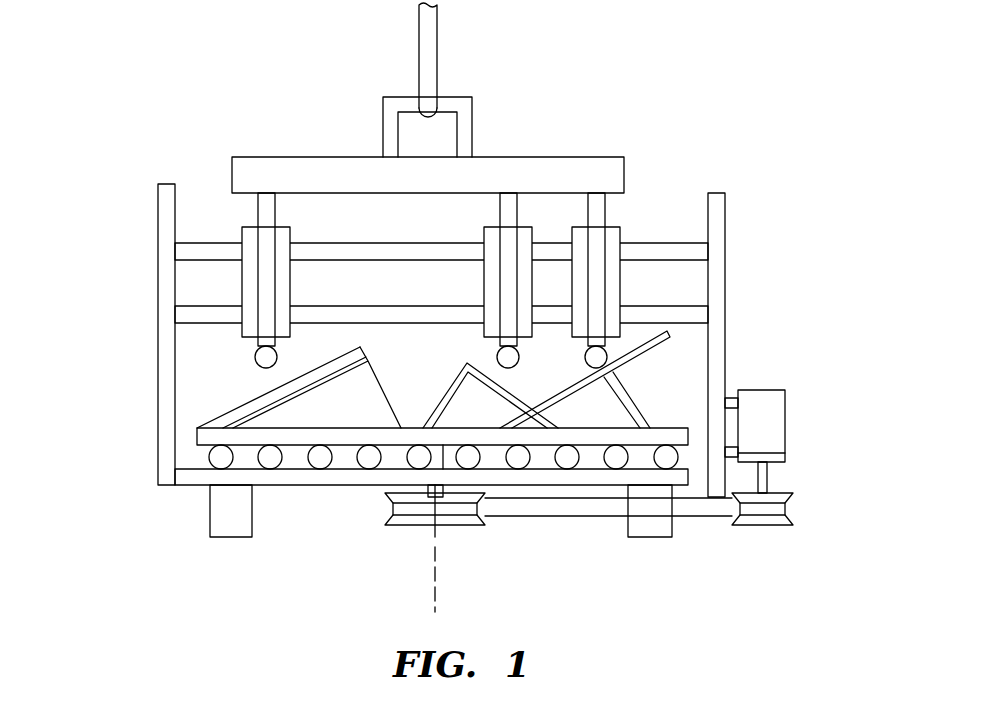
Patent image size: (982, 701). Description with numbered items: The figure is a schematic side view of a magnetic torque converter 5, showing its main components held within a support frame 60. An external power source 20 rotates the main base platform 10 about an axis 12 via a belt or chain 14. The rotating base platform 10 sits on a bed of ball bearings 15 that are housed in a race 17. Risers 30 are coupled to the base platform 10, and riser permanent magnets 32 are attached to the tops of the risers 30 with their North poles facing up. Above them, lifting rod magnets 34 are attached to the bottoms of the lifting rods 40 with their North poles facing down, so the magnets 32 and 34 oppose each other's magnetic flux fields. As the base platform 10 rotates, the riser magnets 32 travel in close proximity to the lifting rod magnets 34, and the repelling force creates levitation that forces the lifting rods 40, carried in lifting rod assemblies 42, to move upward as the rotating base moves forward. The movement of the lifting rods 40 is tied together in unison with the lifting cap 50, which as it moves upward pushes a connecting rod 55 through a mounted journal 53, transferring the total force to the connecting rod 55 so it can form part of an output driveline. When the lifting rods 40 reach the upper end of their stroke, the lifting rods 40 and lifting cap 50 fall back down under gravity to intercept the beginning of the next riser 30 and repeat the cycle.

The magnetic torque converter 5 is at (765, 207).
The rotating base platform 10 is at (663, 428).
The axis 12 is at (437, 587).
The belt or chain 14 is at (585, 518).
The ball bearings 15 is at (318, 462).
The race 17 is at (340, 482).
The external power source 20 is at (786, 437).
The risers 30 is at (290, 390).
The riser permanent magnets 32 is at (231, 409).
The lifting rod magnets 34 is at (640, 360).
The lifting rods 40 is at (265, 238).
The lifting rod assemblies 42 is at (627, 232).
The lifting cap 50 is at (310, 167).
The mounted journal 53 is at (473, 132).
The connecting rod 55 is at (438, 52).
The support frame 60 is at (167, 433).